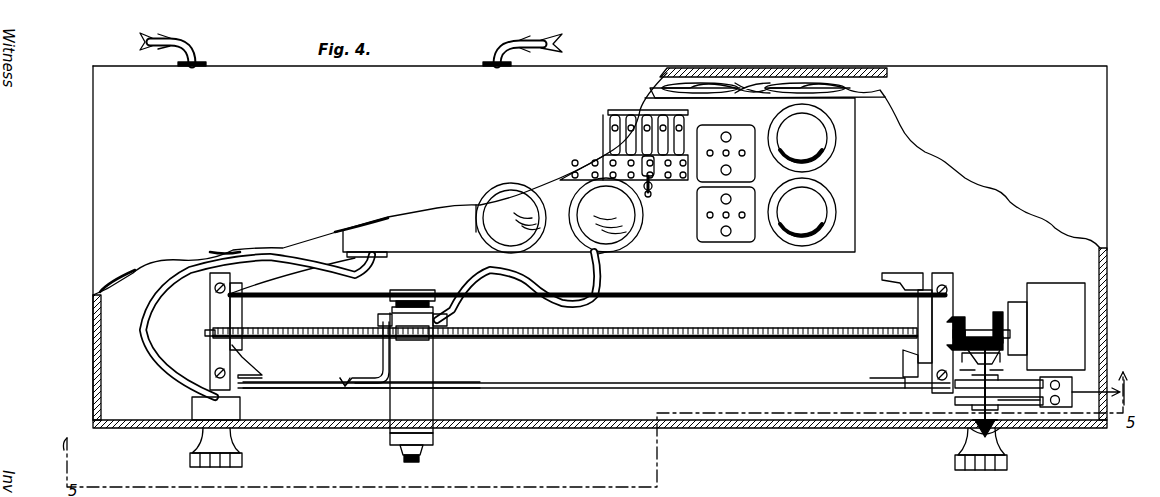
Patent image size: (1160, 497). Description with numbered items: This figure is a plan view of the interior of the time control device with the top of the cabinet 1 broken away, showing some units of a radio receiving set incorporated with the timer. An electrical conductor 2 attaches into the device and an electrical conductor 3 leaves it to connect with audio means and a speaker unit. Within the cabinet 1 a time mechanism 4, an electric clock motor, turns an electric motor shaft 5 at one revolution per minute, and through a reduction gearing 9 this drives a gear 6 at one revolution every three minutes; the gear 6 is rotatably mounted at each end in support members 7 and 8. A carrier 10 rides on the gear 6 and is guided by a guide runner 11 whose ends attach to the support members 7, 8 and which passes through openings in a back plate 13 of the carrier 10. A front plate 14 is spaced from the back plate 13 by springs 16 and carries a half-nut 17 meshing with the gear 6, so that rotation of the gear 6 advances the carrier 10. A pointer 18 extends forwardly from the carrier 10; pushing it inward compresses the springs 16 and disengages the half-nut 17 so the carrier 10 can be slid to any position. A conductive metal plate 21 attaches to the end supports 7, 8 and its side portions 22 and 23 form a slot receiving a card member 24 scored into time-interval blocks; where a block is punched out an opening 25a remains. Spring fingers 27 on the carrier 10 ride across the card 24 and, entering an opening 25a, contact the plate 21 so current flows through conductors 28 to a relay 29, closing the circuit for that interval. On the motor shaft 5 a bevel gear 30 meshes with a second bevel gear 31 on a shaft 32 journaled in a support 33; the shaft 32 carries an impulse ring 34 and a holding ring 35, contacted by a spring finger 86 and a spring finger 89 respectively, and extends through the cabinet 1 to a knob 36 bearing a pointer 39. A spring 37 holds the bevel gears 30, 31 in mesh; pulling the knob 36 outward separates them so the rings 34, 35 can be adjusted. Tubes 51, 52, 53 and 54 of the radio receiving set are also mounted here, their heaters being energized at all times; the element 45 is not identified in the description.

The cabinet 1 is at (963, 80).
The electrical conductor 2 is at (200, 50).
The electrical conductor 3 is at (505, 47).
The time mechanism 4 is at (1078, 313).
The electric motor shaft 5 is at (975, 330).
The gear 6 is at (843, 332).
The support member 7 is at (927, 283).
The support member 8 is at (243, 285).
The reduction gearing 9 is at (955, 318).
The carrier 10 is at (411, 360).
The guide runner 11 is at (712, 295).
The back plate 13 is at (398, 290).
The front plate 14 is at (377, 319).
The spring 16 is at (448, 320).
The half-nut 17 is at (417, 342).
The pointer 18 is at (432, 410).
The plate 21 is at (322, 392).
The side portion 22 is at (262, 378).
The side portion 23 is at (893, 377).
The member 24 is at (565, 385).
The opening 25a is at (352, 388).
The spring finger 27 is at (380, 362).
The conductor 28 is at (603, 276).
The relay 29 is at (678, 180).
The bevel gear 30 is at (1000, 312).
The second bevel gear 31 is at (972, 330).
The shaft 32 is at (1000, 345).
The support 33 is at (995, 370).
The impulse ring 34 is at (1108, 392).
The holding ring 35 is at (1000, 405).
The knob 36 is at (978, 463).
The spring 37 is at (998, 430).
The pointer 39 is at (972, 440).
The foot 45 is at (190, 459).
The tube 51 is at (831, 148).
The tube 52 is at (832, 218).
The tube 53 is at (487, 222).
The tube 54 is at (612, 226).
The spring finger 86 is at (1043, 383).
The spring finger 89 is at (1040, 400).